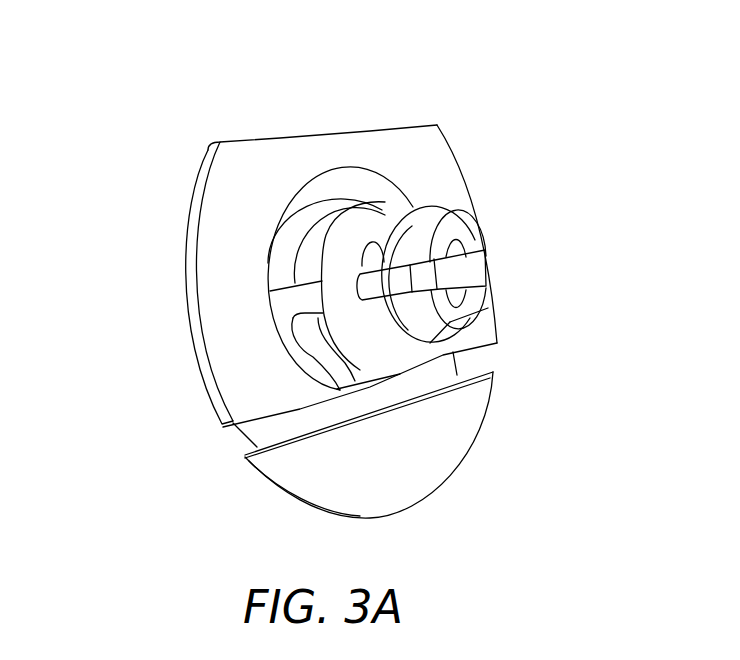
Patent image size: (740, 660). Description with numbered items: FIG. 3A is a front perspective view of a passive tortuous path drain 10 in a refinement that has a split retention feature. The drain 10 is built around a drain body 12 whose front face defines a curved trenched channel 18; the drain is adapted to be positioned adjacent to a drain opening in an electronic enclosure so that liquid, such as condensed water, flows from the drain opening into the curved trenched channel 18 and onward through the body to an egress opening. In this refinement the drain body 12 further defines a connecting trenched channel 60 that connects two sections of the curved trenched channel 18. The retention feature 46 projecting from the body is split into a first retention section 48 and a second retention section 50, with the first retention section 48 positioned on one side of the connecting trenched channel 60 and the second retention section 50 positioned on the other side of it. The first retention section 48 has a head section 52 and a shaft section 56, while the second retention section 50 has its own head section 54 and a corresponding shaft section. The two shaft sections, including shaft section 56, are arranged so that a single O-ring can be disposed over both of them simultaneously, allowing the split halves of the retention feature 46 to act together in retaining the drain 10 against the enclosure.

The passive tortuous path drain 10 is at (422, 80).
The drain body 12 is at (233, 194).
The curved trenched channel 18 is at (320, 198).
The retention feature 46 is at (478, 258).
The first retention section 48 is at (442, 228).
The second retention section 50 is at (420, 208).
The head section 52 is at (488, 309).
The head section 54 is at (372, 253).
The shaft section 56 is at (378, 318).
The connecting trenched channel 60 is at (297, 300).